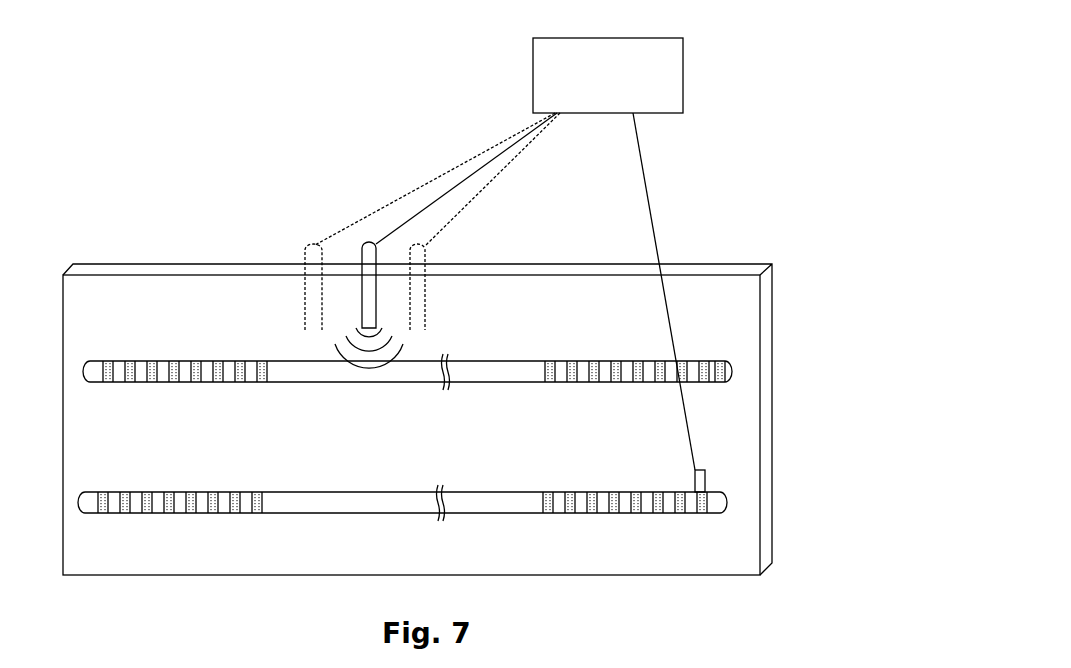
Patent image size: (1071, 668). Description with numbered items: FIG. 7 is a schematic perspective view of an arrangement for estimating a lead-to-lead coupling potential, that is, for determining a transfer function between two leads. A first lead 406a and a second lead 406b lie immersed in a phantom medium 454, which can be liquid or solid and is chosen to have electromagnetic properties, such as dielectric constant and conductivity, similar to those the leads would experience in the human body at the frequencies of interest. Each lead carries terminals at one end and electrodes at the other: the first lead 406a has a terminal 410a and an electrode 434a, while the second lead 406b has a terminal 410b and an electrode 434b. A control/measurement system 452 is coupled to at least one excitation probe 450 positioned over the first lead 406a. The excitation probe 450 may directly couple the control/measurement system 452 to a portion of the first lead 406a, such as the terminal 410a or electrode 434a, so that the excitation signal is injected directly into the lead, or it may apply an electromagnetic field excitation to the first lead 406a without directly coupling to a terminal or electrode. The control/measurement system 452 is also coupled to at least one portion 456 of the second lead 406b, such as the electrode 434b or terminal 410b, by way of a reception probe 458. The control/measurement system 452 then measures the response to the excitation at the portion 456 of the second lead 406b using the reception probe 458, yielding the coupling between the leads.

The control/measurement system 452 is at (687, 44).
The phantom medium 454 is at (729, 262).
The excitation probe 450 is at (377, 312).
The first lead 406a is at (192, 326).
The second lead 406b is at (202, 473).
The terminal 410a is at (268, 386).
The terminal 410b is at (262, 517).
The electrode 434a is at (711, 386).
The electrode 434b is at (705, 517).
The portion of the second lead 456 is at (690, 480).
The reception probe 458 is at (706, 470).